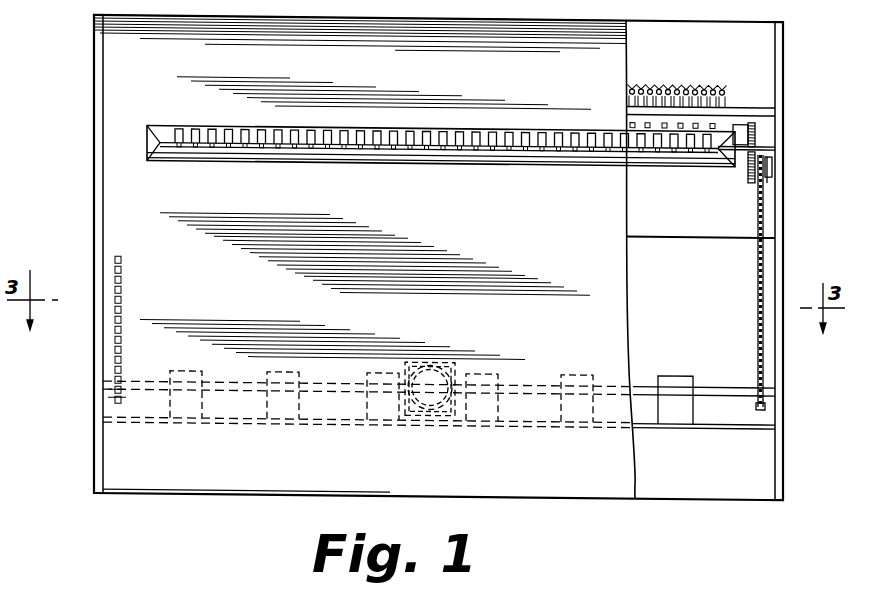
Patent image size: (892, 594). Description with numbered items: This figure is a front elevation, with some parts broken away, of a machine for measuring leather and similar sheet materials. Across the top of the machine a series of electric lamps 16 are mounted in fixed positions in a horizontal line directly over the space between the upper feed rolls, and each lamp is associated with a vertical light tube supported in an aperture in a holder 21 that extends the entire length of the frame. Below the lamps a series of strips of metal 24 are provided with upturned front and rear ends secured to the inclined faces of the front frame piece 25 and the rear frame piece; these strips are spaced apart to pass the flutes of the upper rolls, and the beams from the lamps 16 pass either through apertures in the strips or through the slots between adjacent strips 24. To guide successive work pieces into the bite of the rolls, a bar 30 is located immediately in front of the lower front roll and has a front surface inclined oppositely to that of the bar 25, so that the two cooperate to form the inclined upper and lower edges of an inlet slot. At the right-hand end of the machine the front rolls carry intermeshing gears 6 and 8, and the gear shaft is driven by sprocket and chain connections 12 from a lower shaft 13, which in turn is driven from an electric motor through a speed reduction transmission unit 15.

The gear 6 is at (752, 115).
The gear 8 is at (750, 150).
The sprocket and chain connections 12 is at (757, 276).
The lower shaft 13 is at (541, 380).
The speed reduction transmission unit 15 is at (440, 358).
The electric lamps 16 is at (697, 78).
The holder 21 is at (730, 100).
The strips of metal 24 is at (343, 126).
The front frame piece 25 is at (162, 126).
The bar 30 is at (255, 160).